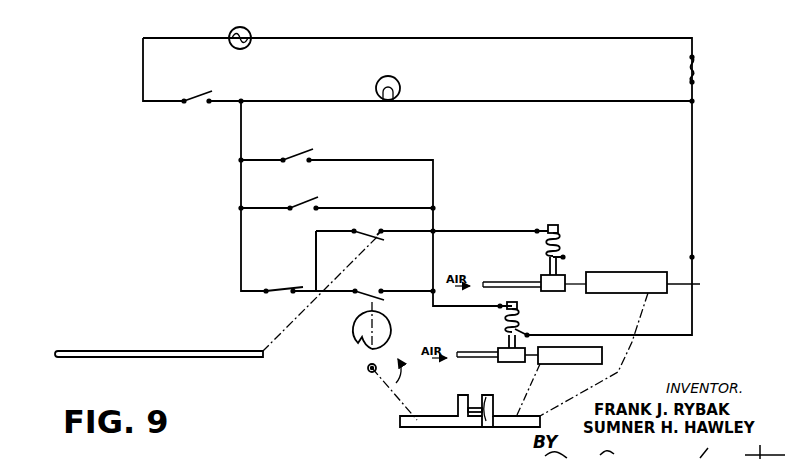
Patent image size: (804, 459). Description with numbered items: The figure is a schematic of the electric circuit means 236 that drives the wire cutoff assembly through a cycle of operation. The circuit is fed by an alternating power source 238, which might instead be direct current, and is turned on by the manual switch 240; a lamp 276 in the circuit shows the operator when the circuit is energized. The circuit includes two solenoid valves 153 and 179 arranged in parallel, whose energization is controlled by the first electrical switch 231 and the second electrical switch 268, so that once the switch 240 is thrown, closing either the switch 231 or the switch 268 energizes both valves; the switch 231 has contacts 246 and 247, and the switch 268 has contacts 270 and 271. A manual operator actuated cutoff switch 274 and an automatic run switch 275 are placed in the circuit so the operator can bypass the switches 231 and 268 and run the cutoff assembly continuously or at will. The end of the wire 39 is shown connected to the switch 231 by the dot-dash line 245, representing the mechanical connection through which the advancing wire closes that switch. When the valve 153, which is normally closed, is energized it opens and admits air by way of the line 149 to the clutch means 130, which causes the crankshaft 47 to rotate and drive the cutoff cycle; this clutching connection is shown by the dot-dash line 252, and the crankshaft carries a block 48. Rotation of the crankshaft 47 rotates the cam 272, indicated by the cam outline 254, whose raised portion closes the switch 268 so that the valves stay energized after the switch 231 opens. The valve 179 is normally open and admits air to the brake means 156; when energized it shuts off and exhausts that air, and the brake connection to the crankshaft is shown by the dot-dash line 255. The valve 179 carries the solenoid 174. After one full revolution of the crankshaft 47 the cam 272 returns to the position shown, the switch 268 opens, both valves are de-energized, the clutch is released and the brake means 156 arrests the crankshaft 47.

The wire 39 is at (176, 348).
The crankshaft 47 is at (445, 422).
The clevis block 48 is at (486, 410).
The clutch means 130 is at (662, 284).
The line 149 is at (509, 280).
The solenoid valve 153 is at (548, 288).
The brake means 156 is at (602, 355).
The brake solenoid 174 is at (493, 331).
The solenoid valve 179 is at (520, 361).
The first electrical switch 231 is at (366, 227).
The electric circuit means 236 is at (512, 165).
The alternating power source 238 is at (251, 34).
The manual switch 240 is at (194, 90).
The dot-dash line 245 is at (300, 310).
The conductor 246 is at (330, 232).
The switch contact 247 is at (414, 221).
The dot-dash line 252 is at (632, 342).
The cam 254 is at (356, 343).
The dot-dash line 255 is at (546, 389).
The second electrical switch 268 is at (372, 302).
The switch contact 270 is at (357, 293).
The switch contact 271 is at (393, 294).
The cam 272 is at (368, 380).
The manual operator actuated cutoff switch 274 is at (305, 196).
The automatic run switch 275 is at (293, 152).
The lamp 276 is at (378, 83).